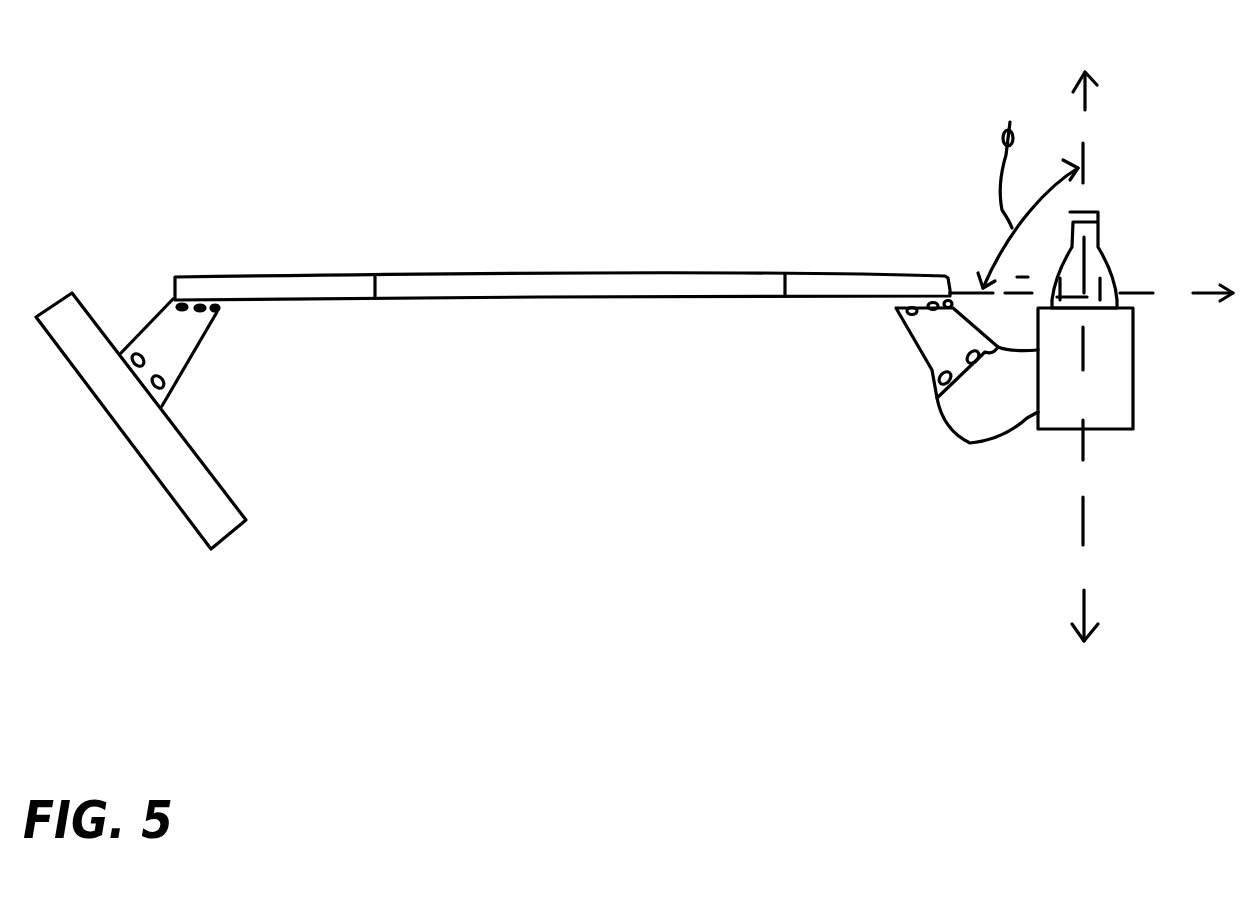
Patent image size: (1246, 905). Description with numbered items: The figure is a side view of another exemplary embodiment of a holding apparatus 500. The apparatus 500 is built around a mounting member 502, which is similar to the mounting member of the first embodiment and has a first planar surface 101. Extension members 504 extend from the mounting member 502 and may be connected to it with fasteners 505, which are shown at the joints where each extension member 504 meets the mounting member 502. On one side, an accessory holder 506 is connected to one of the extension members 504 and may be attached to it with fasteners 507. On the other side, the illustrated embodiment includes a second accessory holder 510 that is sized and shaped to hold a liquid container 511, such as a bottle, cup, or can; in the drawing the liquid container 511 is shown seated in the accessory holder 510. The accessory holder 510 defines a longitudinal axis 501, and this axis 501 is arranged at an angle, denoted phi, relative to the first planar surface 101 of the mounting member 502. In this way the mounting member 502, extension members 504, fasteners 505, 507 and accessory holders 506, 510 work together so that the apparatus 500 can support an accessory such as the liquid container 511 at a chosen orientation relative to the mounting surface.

The apparatus 500 is at (190, 97).
The first planar surface 101 is at (560, 302).
The longitudinal axis 501 is at (1083, 165).
The mounting member 502 is at (740, 271).
The extension members 504 is at (177, 342).
The fasteners 505 is at (208, 316).
The accessory holder 506 is at (227, 527).
The fasteners 507 is at (160, 390).
The accessory holder 510 is at (1107, 429).
The liquid container 511 is at (1107, 273).